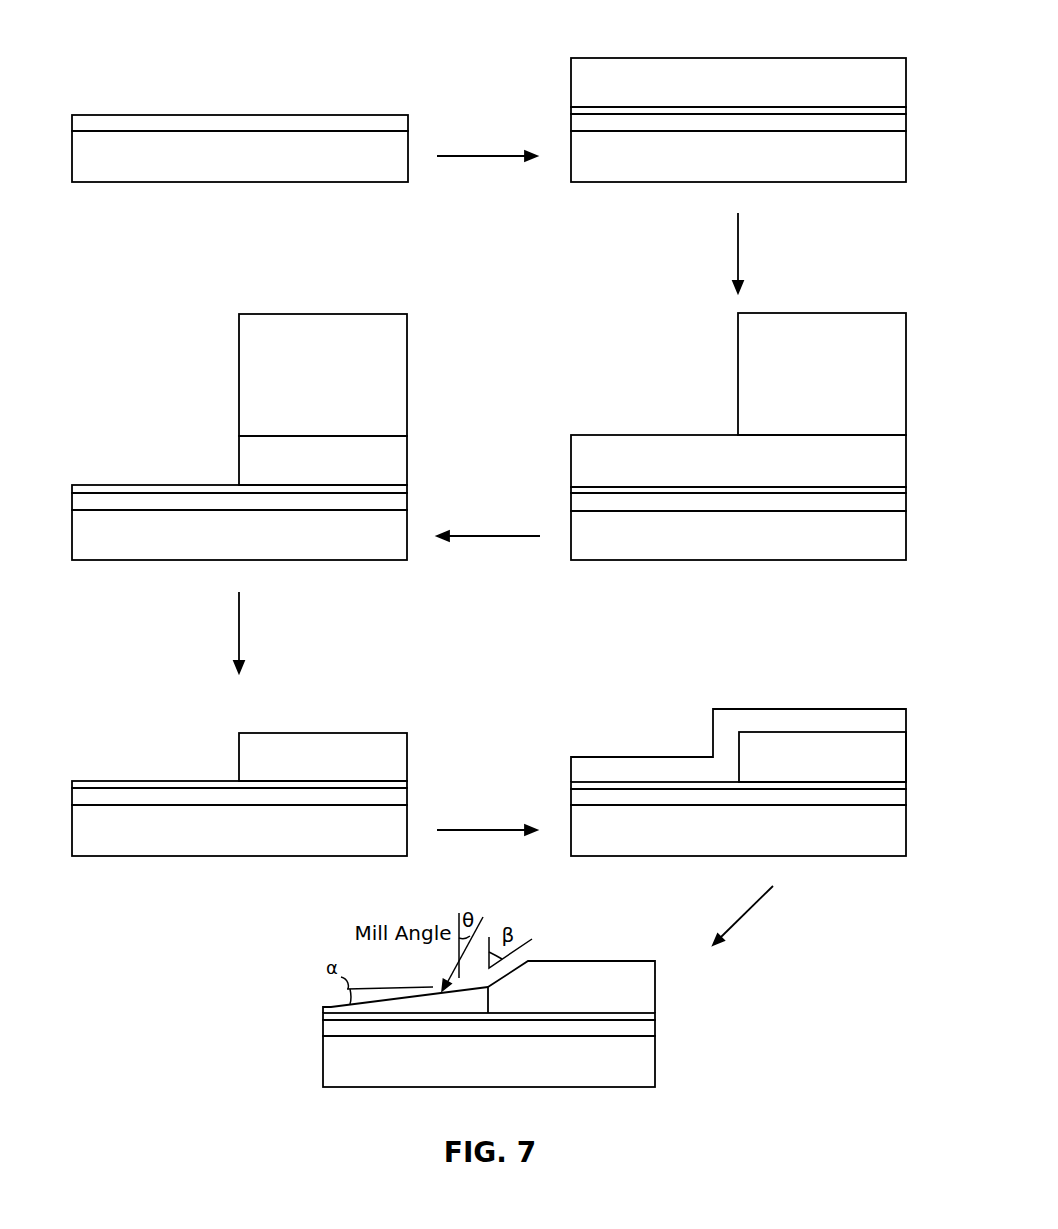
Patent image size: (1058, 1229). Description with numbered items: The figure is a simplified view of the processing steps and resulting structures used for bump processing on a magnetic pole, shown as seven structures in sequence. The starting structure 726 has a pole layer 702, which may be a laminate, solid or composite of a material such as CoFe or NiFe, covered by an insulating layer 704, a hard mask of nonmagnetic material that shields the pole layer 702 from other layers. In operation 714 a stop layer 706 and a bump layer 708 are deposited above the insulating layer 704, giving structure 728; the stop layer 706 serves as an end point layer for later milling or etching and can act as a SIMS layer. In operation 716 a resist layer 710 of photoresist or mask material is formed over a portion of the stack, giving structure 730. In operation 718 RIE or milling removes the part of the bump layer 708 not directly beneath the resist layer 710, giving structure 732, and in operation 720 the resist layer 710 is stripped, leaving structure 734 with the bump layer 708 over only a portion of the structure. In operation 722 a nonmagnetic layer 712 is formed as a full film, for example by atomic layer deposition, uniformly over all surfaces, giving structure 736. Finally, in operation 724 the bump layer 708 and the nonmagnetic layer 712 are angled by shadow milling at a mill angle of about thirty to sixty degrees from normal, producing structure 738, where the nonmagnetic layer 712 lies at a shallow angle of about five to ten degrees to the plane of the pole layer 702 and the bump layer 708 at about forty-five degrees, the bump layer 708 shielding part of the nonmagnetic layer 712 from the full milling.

The pole layer 702 is at (489, 609).
The insulating layer 704 is at (148, 114).
The stop layer 706 is at (571, 110).
The bump layer 708 is at (572, 535).
The resist layer 710 is at (572, 374).
The nonmagnetic layer 712 is at (713, 728).
The operation 714 is at (487, 146).
The operation 716 is at (757, 253).
The operation 718 is at (488, 525).
The operation 720 is at (258, 632).
The operation 722 is at (487, 820).
The operation 724 is at (751, 915).
The structure 726 is at (321, 66).
The structure 728 is at (819, 33).
The structure 730 is at (656, 368).
The structure 732 is at (180, 410).
The structure 734 is at (180, 735).
The structure 736 is at (820, 657).
The structure 738 is at (567, 914).